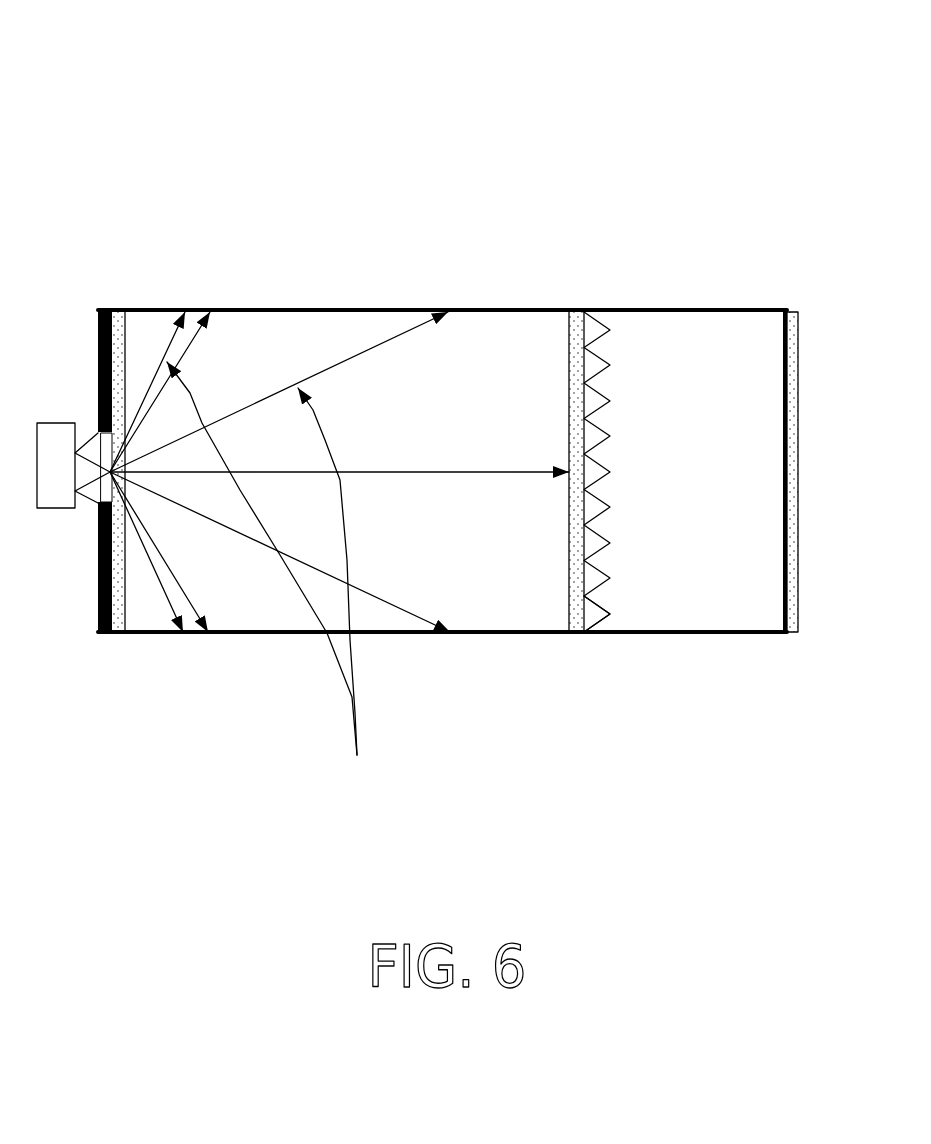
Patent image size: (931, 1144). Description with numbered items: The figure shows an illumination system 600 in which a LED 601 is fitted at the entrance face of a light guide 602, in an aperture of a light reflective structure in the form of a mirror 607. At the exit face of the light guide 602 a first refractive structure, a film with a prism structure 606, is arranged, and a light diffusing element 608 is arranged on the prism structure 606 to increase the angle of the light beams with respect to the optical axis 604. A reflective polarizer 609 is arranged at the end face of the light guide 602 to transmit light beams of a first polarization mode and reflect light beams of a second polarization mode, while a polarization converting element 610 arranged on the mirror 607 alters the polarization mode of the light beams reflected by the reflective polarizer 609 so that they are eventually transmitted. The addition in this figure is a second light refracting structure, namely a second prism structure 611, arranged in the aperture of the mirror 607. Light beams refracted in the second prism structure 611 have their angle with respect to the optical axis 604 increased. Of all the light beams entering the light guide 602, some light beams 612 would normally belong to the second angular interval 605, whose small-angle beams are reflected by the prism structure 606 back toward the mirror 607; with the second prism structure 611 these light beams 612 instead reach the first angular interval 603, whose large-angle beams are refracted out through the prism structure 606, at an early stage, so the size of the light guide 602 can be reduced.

The illumination system 600 is at (238, 145).
The LED 601 is at (52, 500).
The light guide 602 is at (610, 635).
The first angular interval 603 is at (190, 385).
The optical axis 604 is at (525, 474).
The second angular interval 605 is at (342, 435).
The prism structure 606 is at (595, 400).
The mirror 607 is at (102, 633).
The light diffusing element 608 is at (575, 623).
The reflective polarizer 609 is at (800, 412).
The polarization converting element 610 is at (125, 357).
The second prism structure 611 is at (100, 438).
The light beams 612 is at (272, 581).